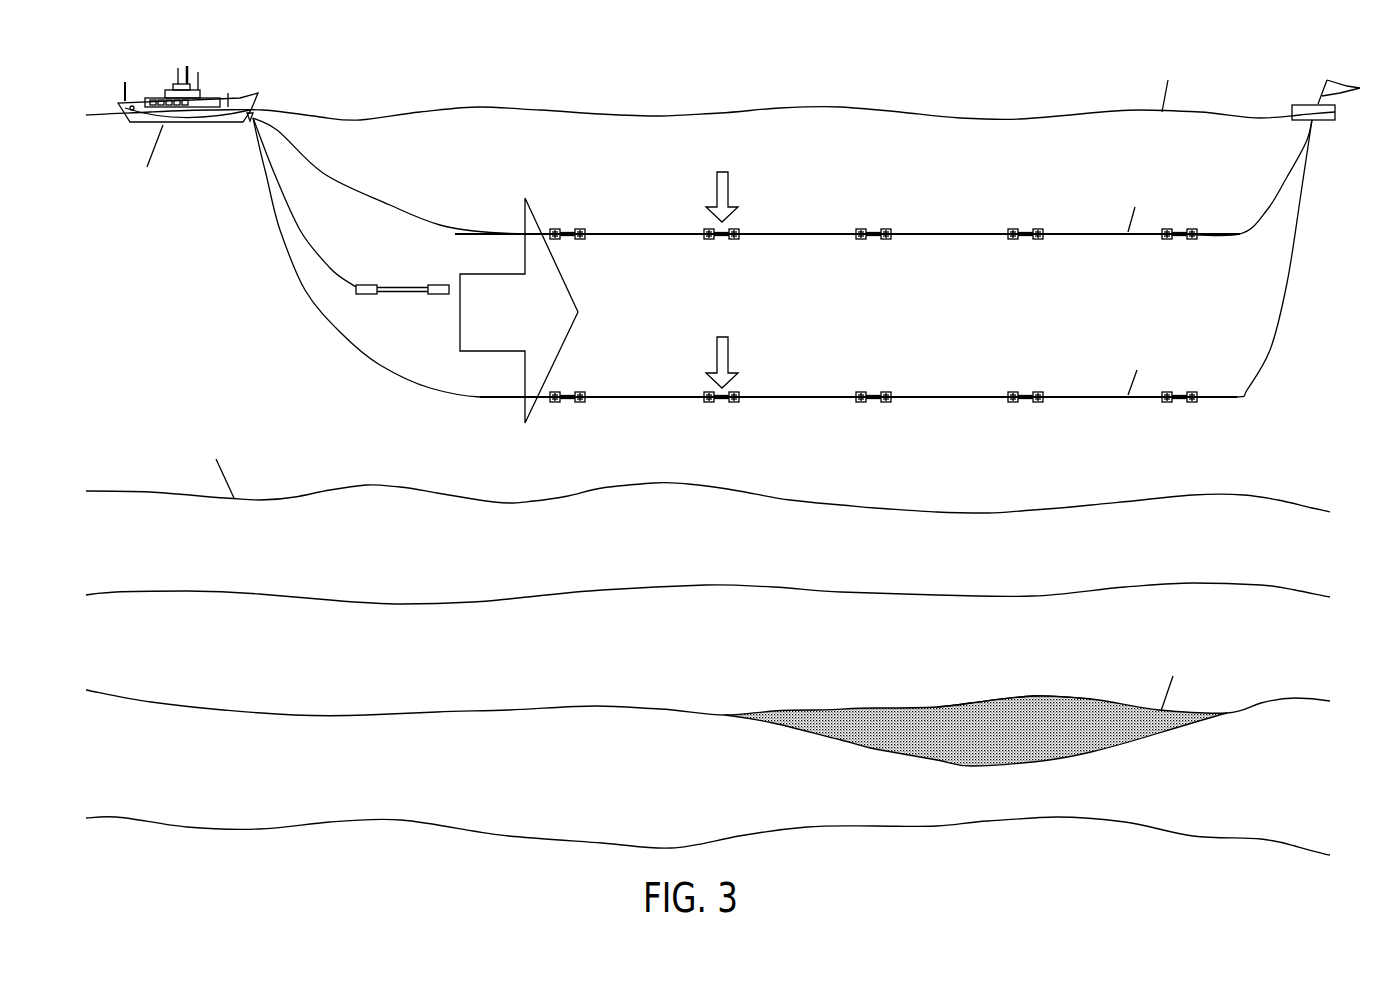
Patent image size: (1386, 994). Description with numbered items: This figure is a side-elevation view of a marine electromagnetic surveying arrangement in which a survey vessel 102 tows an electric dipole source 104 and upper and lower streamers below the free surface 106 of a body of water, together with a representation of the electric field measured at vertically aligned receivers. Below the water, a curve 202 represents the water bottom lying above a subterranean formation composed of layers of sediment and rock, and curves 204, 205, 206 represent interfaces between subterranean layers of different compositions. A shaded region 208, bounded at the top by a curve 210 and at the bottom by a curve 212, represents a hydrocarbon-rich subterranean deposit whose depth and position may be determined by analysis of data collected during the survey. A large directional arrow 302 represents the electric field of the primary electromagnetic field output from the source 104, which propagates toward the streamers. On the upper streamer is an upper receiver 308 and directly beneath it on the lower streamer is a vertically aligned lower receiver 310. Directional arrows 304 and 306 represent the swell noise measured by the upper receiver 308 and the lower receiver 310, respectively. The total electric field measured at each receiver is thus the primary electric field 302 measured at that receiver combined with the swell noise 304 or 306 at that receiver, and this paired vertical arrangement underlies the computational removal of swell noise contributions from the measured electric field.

The survey vessel 102 is at (210, 93).
The electric dipole source 104 is at (399, 272).
The free surface 106 is at (1012, 108).
The water bottom 202 is at (1032, 513).
The interface 204 is at (1032, 597).
The interface 205 is at (606, 708).
The interface 206 is at (606, 843).
The hydrocarbon-rich subterranean deposit 208 is at (1045, 706).
The top curve of deposit 210 is at (971, 701).
The bottom curve of deposit 212 is at (1135, 744).
The electric field of primary electromagnetic field 302 is at (553, 285).
The swell noise at upper receiver 304 is at (727, 178).
The swell noise at lower receiver 306 is at (727, 343).
The upper receiver 308 is at (737, 220).
The lower receiver 310 is at (737, 387).